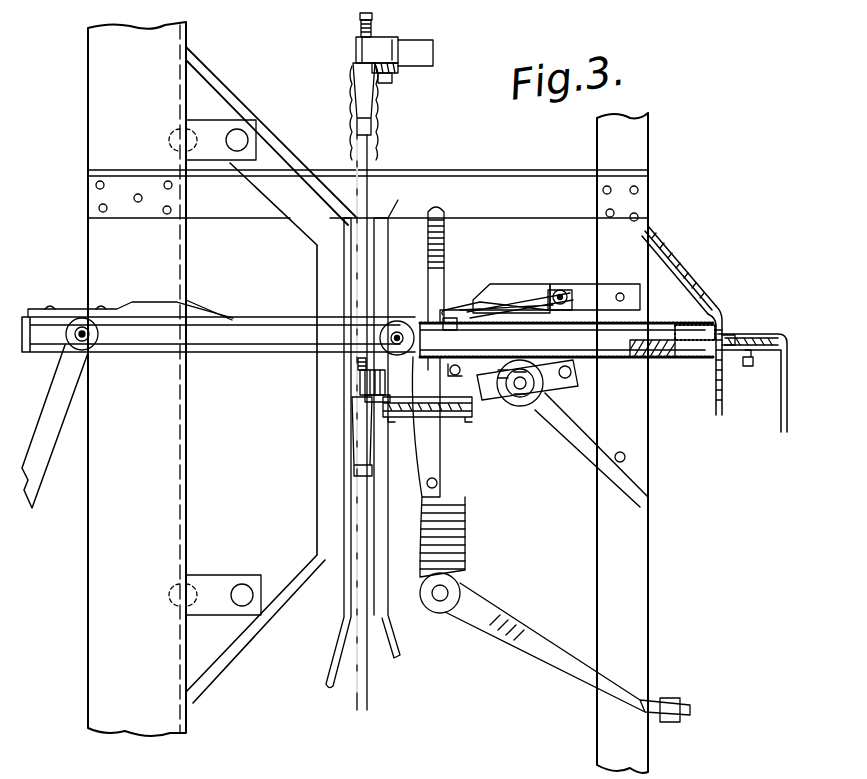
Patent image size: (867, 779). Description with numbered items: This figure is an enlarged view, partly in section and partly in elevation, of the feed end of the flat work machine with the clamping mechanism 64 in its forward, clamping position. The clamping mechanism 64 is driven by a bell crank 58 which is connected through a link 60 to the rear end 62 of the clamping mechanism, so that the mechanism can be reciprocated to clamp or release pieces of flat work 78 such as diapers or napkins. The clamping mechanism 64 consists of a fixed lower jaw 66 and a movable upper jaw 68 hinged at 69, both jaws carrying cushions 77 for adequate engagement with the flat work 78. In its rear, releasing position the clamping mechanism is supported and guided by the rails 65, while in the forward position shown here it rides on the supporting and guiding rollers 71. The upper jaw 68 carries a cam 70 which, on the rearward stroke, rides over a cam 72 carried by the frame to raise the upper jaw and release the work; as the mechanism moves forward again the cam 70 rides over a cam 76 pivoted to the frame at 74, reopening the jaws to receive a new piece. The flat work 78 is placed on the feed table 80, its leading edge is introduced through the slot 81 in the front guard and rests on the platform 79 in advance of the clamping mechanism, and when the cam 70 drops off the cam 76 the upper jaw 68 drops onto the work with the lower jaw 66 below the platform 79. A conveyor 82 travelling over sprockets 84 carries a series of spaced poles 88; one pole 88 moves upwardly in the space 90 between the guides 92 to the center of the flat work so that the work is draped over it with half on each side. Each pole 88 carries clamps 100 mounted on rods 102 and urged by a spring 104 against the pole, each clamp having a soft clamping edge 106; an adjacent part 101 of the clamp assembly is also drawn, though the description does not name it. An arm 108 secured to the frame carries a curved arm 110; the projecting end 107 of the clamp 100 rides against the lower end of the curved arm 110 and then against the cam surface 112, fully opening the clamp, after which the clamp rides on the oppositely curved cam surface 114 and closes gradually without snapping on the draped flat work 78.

The bell crank 58 is at (45, 437).
The link 60 is at (178, 343).
The rear end of clamping mechanism 62 is at (378, 338).
The clamping mechanism 64 is at (585, 380).
The rail 65 is at (66, 318).
The fixed lower jaw 66 is at (612, 352).
The movable upper jaw 68 is at (548, 304).
The hinge 69 is at (445, 313).
The cam 70 is at (570, 308).
The supporting and guiding roller 71 is at (530, 405).
The cam 72 is at (154, 306).
The pivot 74 is at (563, 293).
The cam 76 is at (510, 290).
The cushion 77 is at (722, 305).
The flat work 78 is at (350, 150).
The platform 79 is at (658, 340).
The feed table 80 is at (752, 362).
The slot 81 is at (728, 333).
The conveyor 82 is at (350, 685).
The sprocket 84 is at (685, 290).
The pole 88 is at (362, 98).
The space 90 is at (360, 590).
The guide 92 is at (372, 561).
The clamp 100 is at (385, 42).
The valve casing 101 is at (428, 48).
The rod 102 is at (364, 13).
The spring 104 is at (360, 30).
The clamping edge 106 is at (392, 78).
The projecting end of clamp 107 is at (388, 55).
The arm 108 is at (560, 628).
The curved arm 110 is at (468, 538).
The cam surface 112 is at (430, 458).
The oppositely curved cam surface 114 is at (446, 222).